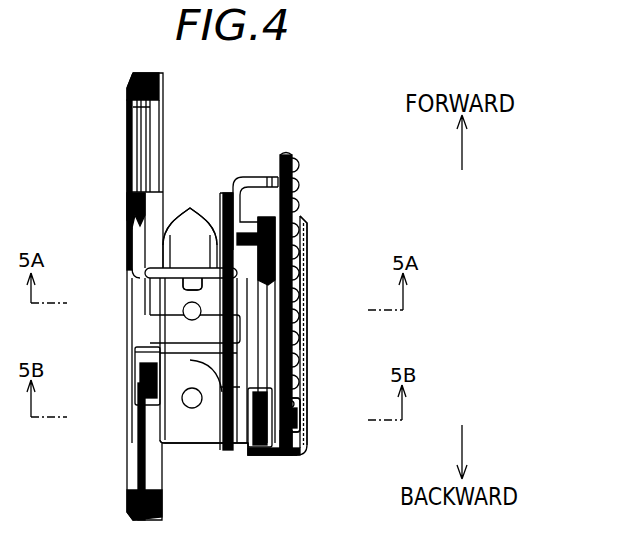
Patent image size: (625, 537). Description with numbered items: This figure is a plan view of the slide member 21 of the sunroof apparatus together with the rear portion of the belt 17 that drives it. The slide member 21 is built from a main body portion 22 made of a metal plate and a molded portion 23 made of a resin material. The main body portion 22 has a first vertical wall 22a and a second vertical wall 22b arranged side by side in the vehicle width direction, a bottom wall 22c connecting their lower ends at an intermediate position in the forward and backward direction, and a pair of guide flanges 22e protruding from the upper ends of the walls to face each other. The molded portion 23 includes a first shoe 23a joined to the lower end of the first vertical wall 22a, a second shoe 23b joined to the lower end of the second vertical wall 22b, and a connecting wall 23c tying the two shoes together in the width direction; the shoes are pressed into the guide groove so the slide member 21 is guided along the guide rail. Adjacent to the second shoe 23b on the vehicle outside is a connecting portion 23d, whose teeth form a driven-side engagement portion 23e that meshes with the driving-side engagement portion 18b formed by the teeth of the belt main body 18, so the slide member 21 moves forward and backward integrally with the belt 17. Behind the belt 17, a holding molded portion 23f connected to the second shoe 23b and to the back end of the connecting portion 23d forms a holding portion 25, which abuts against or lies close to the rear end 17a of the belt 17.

The slide member 21 is at (82, 313).
The main body portion 22 is at (150, 335).
The first vertical wall 22a is at (147, 408).
The second vertical wall 22b is at (245, 460).
The bottom wall 22c is at (190, 293).
The guide flanges 22e is at (205, 232).
The molded portion 23 is at (140, 407).
The first shoe 23a is at (127, 137).
The second shoe 23b is at (253, 187).
The connecting wall 23c is at (188, 442).
The connecting portion 23d is at (309, 342).
The driven-side engagement portion 23e is at (306, 288).
The holding molded portion 23f is at (305, 420).
The holding portion 25 is at (305, 420).
The belt 17 is at (303, 183).
The rear end of the belt 17a is at (290, 436).
The belt main body 18 is at (303, 183).
The driving-side engagement portion 18b is at (303, 258).